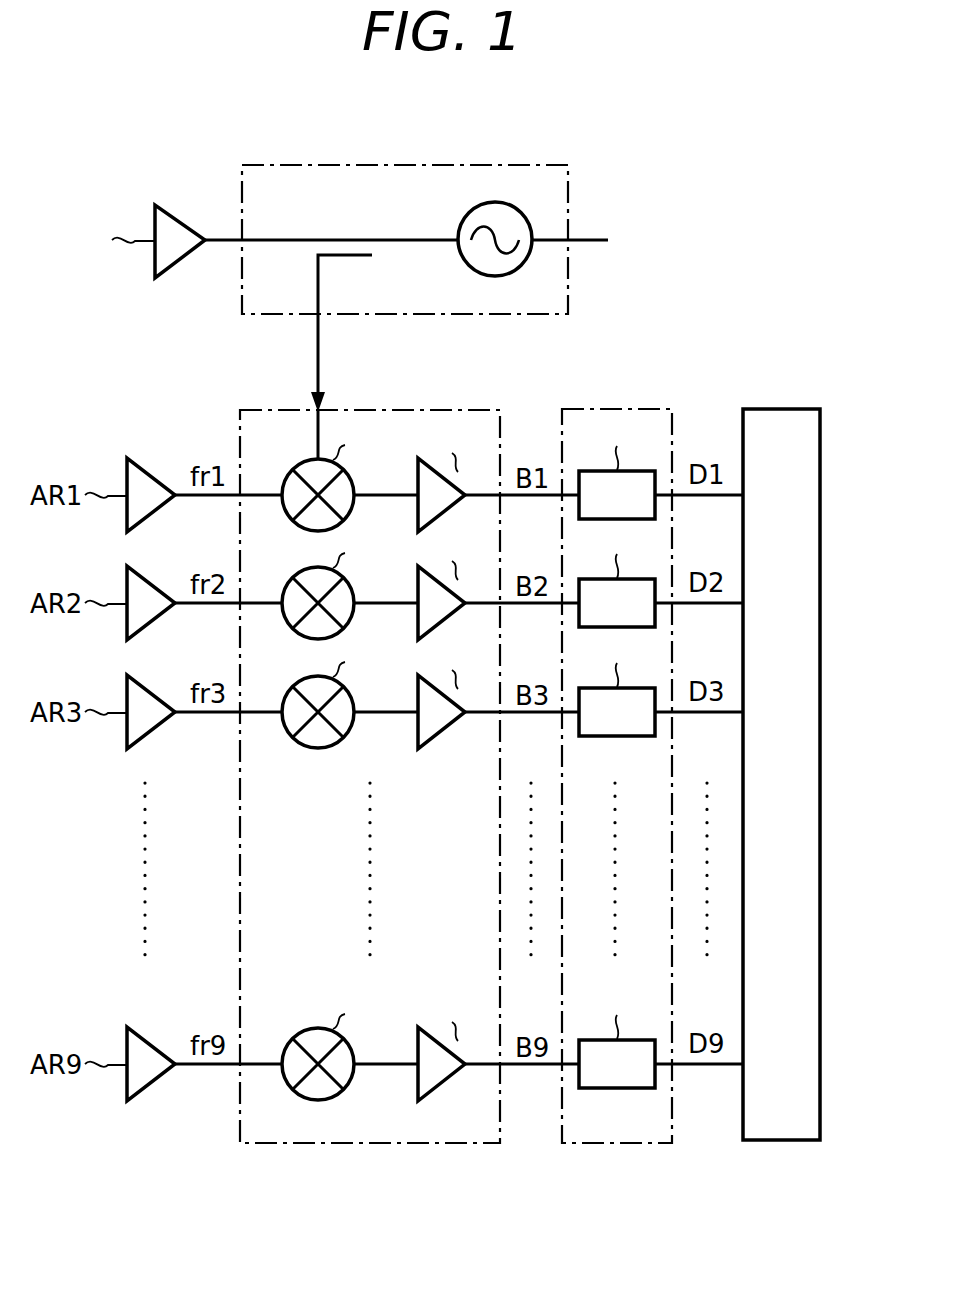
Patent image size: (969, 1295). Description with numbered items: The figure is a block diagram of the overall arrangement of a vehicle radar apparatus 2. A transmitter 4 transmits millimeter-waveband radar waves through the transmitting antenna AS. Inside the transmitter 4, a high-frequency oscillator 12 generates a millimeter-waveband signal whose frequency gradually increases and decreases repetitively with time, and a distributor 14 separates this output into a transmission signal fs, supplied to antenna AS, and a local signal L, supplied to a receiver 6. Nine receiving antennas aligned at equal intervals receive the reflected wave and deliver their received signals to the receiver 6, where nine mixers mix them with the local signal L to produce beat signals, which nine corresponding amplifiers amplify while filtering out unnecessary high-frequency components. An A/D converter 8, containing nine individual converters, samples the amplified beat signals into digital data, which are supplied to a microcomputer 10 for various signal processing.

The radar apparatus 2 is at (647, 140).
The transmitter 4 is at (482, 165).
The receiver 6 is at (455, 410).
The A/D converter 8 is at (627, 409).
The microcomputer 10 is at (785, 408).
The high-frequency oscillator 12 is at (468, 214).
The distributor 14 is at (352, 256).